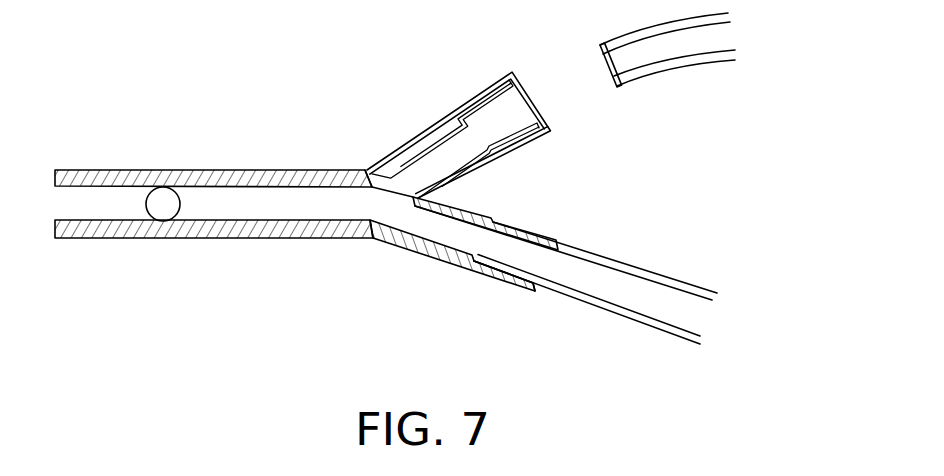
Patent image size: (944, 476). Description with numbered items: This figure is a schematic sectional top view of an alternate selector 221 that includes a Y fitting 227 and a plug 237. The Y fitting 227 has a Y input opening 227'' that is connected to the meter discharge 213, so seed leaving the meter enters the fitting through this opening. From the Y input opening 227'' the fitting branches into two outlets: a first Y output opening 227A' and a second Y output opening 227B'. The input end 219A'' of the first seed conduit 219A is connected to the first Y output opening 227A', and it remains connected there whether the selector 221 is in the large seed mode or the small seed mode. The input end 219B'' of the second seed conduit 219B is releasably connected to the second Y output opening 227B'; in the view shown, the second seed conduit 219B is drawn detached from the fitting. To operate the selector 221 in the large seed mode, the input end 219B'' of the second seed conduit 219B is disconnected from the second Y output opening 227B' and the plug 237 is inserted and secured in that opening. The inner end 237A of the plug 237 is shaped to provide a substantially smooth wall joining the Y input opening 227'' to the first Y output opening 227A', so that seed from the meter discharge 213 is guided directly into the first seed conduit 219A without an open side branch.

The meter discharge 213 is at (183, 205).
The alternate selector 221 is at (395, 292).
The Y fitting 227 is at (422, 242).
The Y input opening 227'' is at (214, 255).
The first Y output opening 227A' is at (513, 314).
The second Y output opening 227B' is at (465, 105).
The plug 237 is at (546, 108).
The inner end of the plug 237A is at (386, 196).
The first seed conduit 219A is at (602, 323).
The input end of the first seed conduit 219A'' is at (566, 253).
The second seed conduit 219B is at (721, 53).
The input end of the second seed conduit 219B'' is at (676, 83).